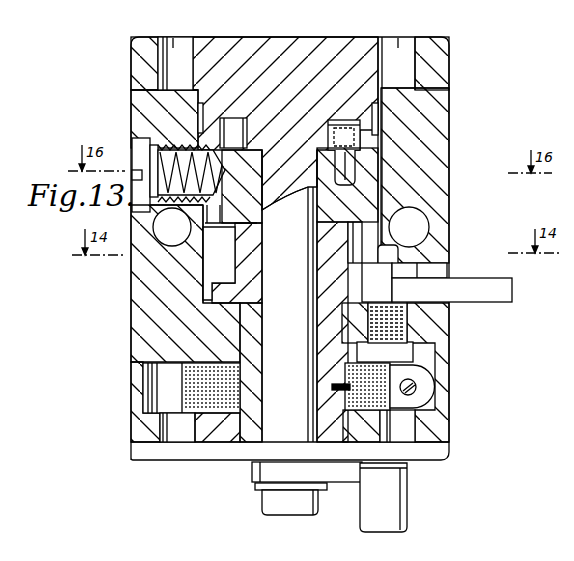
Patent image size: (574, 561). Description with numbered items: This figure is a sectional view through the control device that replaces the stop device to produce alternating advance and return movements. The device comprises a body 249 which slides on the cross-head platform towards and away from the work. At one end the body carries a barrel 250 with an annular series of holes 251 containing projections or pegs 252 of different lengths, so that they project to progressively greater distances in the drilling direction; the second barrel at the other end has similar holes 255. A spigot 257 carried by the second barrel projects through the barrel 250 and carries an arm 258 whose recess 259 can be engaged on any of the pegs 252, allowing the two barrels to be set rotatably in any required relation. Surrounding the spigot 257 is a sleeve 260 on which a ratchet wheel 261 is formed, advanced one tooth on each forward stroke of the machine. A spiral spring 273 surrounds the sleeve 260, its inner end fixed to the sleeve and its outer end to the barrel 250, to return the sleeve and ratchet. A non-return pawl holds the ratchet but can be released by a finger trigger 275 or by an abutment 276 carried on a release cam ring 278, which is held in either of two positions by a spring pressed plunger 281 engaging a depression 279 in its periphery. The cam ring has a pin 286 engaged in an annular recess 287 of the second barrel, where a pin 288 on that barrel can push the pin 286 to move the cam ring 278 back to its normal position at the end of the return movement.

The holes 255 is at (173, 60).
The spring pressed plunger 281 is at (193, 150).
The annular recess 287 is at (235, 118).
The depression 279 is at (240, 160).
The pin 288 is at (365, 108).
The pin 286 is at (362, 138).
The release cam ring 278 is at (362, 175).
The abutment 276 is at (396, 248).
The finger trigger 275 is at (497, 294).
The ratchet wheel 261 is at (212, 290).
The spigot 257 is at (300, 294).
The sleeve 260 is at (257, 333).
The body 249 is at (148, 348).
The spiral spring 273 is at (183, 388).
The holes 251 is at (186, 440).
The barrel 250 is at (222, 440).
The arm 258 is at (336, 478).
The recess 259 is at (368, 466).
The projections or pegs 252 is at (382, 512).